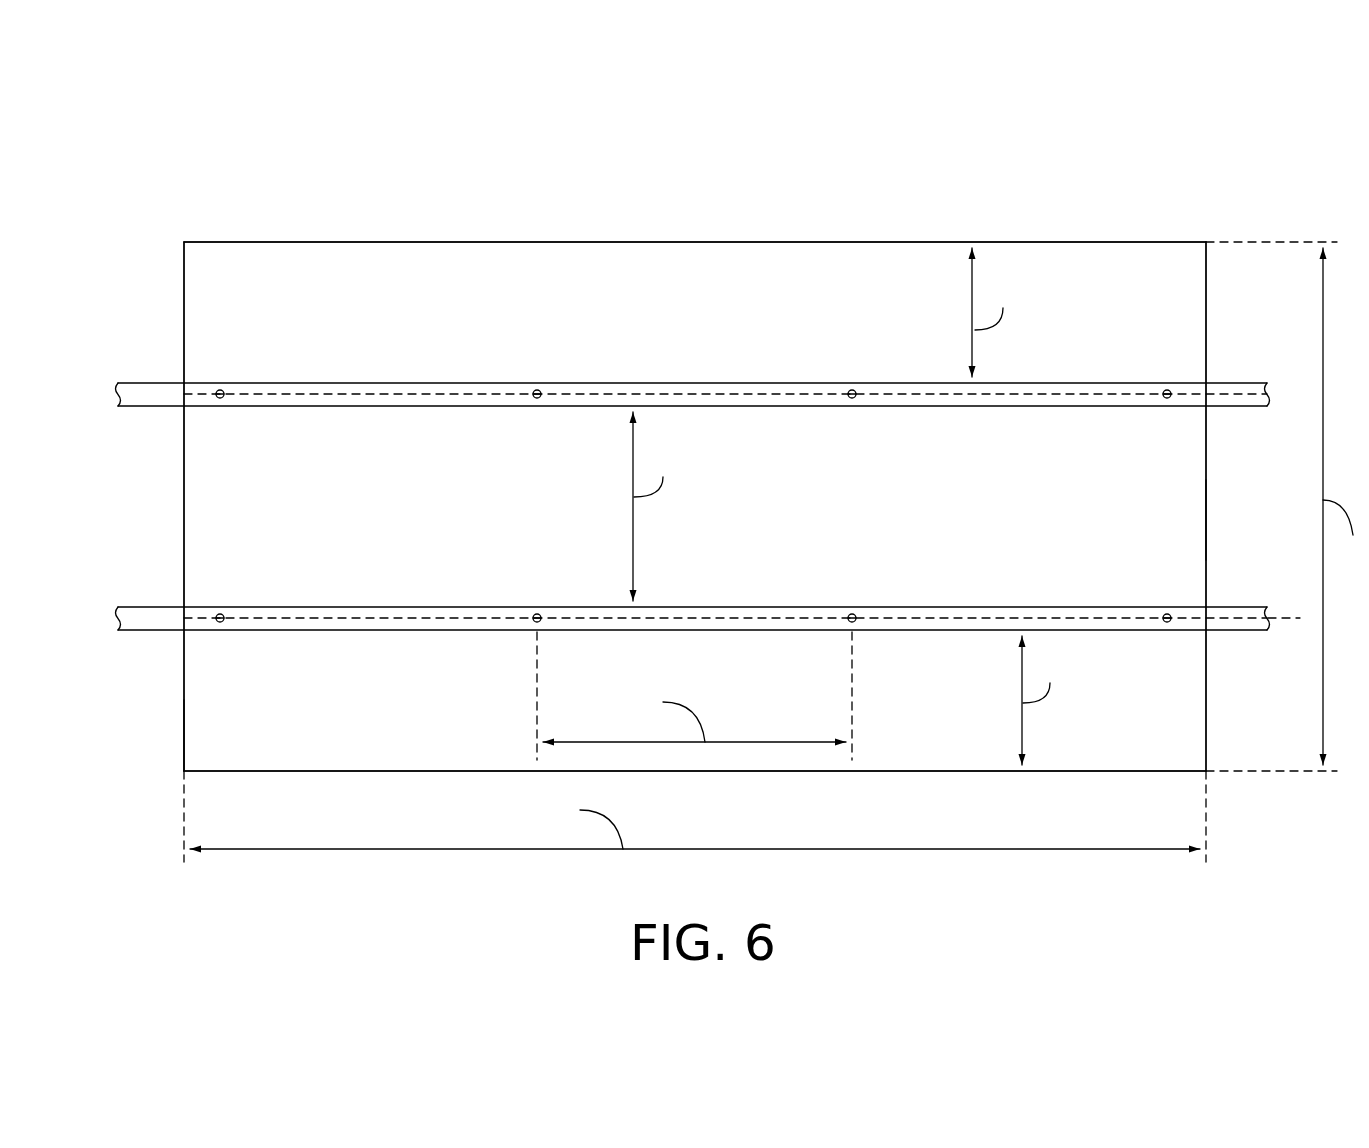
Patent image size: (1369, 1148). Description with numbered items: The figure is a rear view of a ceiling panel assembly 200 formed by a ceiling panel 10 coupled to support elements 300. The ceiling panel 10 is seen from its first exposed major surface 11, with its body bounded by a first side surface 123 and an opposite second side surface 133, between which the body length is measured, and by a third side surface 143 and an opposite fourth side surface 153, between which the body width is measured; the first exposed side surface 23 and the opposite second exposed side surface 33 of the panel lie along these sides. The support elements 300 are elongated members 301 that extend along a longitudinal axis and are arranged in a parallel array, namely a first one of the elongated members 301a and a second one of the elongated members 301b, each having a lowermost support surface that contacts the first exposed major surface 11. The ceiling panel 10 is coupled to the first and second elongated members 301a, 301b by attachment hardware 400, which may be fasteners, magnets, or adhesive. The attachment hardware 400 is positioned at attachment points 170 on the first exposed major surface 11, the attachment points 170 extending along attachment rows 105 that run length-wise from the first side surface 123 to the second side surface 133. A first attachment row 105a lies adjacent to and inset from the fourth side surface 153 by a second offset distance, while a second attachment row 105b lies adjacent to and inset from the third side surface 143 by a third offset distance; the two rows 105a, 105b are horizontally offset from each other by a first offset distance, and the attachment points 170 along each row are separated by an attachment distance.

The ceiling panel assembly 200 is at (97, 172).
The ceiling panel 10 is at (1167, 258).
The first exposed major surface 11 is at (718, 270).
The fourth side surface 153 is at (1002, 242).
The third side surface 143 is at (815, 772).
The first side surface 123 is at (1206, 462).
The first exposed side surface 23 is at (1206, 502).
The second side surface 133 is at (184, 702).
The second exposed side surface 33 is at (184, 733).
The support element 300 is at (687, 488).
The elongated member 301 is at (663, 488).
The first one of the elongated members 301a is at (387, 390).
The second one of the elongated members 301b is at (428, 612).
The attachment row 105 is at (695, 516).
The first attachment row 105a is at (1040, 383).
The second attachment row 105b is at (940, 630).
The attachment hardware 400 is at (220, 383).
The attachment point 170 is at (220, 406).